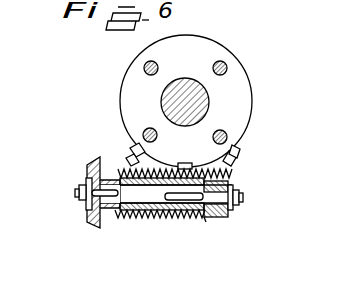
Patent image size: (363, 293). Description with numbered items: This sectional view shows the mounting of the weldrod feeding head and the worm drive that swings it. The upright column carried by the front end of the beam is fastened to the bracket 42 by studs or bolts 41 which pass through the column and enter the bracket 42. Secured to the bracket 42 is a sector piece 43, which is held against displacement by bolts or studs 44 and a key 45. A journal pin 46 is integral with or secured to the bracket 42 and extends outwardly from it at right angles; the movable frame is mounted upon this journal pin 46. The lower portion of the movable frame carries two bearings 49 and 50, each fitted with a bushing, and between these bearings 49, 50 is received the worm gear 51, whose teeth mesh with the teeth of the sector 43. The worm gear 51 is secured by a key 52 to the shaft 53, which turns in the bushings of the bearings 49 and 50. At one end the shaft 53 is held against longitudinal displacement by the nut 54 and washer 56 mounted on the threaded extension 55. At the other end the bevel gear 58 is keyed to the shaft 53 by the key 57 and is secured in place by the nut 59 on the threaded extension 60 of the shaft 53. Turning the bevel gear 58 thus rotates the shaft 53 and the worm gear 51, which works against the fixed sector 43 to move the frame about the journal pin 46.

The studs or bolts 41 is at (213, 66).
The bracket 42 is at (242, 96).
The sector piece 43 is at (238, 153).
The bolts or studs 44 is at (125, 158).
The key 45 is at (200, 158).
The journal pin 46 is at (165, 94).
The bearing 49 is at (143, 212).
The bearing 50 is at (226, 215).
The worm gear 51 is at (207, 218).
The key 52 is at (183, 201).
The shaft 53 is at (135, 195).
The nut 54 is at (234, 189).
The threaded extension 55 is at (243, 197).
The washer 56 is at (233, 207).
The key 57 is at (90, 200).
The bevel gear 58 is at (88, 162).
The nut 59 is at (88, 187).
The threaded extension 60 is at (80, 192).